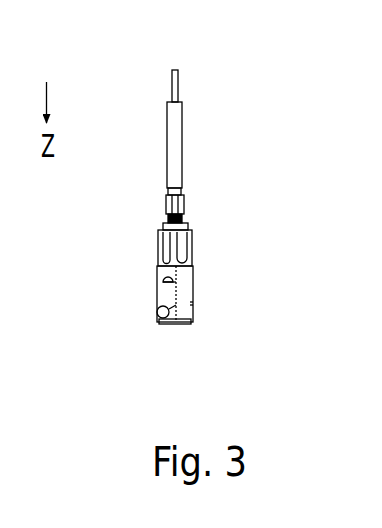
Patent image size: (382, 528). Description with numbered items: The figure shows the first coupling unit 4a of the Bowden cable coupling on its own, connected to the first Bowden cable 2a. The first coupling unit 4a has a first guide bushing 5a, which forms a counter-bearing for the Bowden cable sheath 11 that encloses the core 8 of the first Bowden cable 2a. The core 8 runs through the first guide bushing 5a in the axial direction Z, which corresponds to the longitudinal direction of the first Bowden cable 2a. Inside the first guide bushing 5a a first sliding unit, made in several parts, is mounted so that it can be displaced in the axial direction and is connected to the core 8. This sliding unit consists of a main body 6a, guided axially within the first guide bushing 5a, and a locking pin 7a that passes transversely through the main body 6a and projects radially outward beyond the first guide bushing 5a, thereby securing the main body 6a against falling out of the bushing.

The first Bowden cable 2a is at (184, 186).
The core 8 is at (168, 88).
The Bowden cable sheath 11 is at (170, 155).
The first guide bushing 5a is at (165, 250).
The first coupling unit 4a is at (132, 307).
The main body 6a is at (173, 282).
The locking pin 7a is at (167, 313).